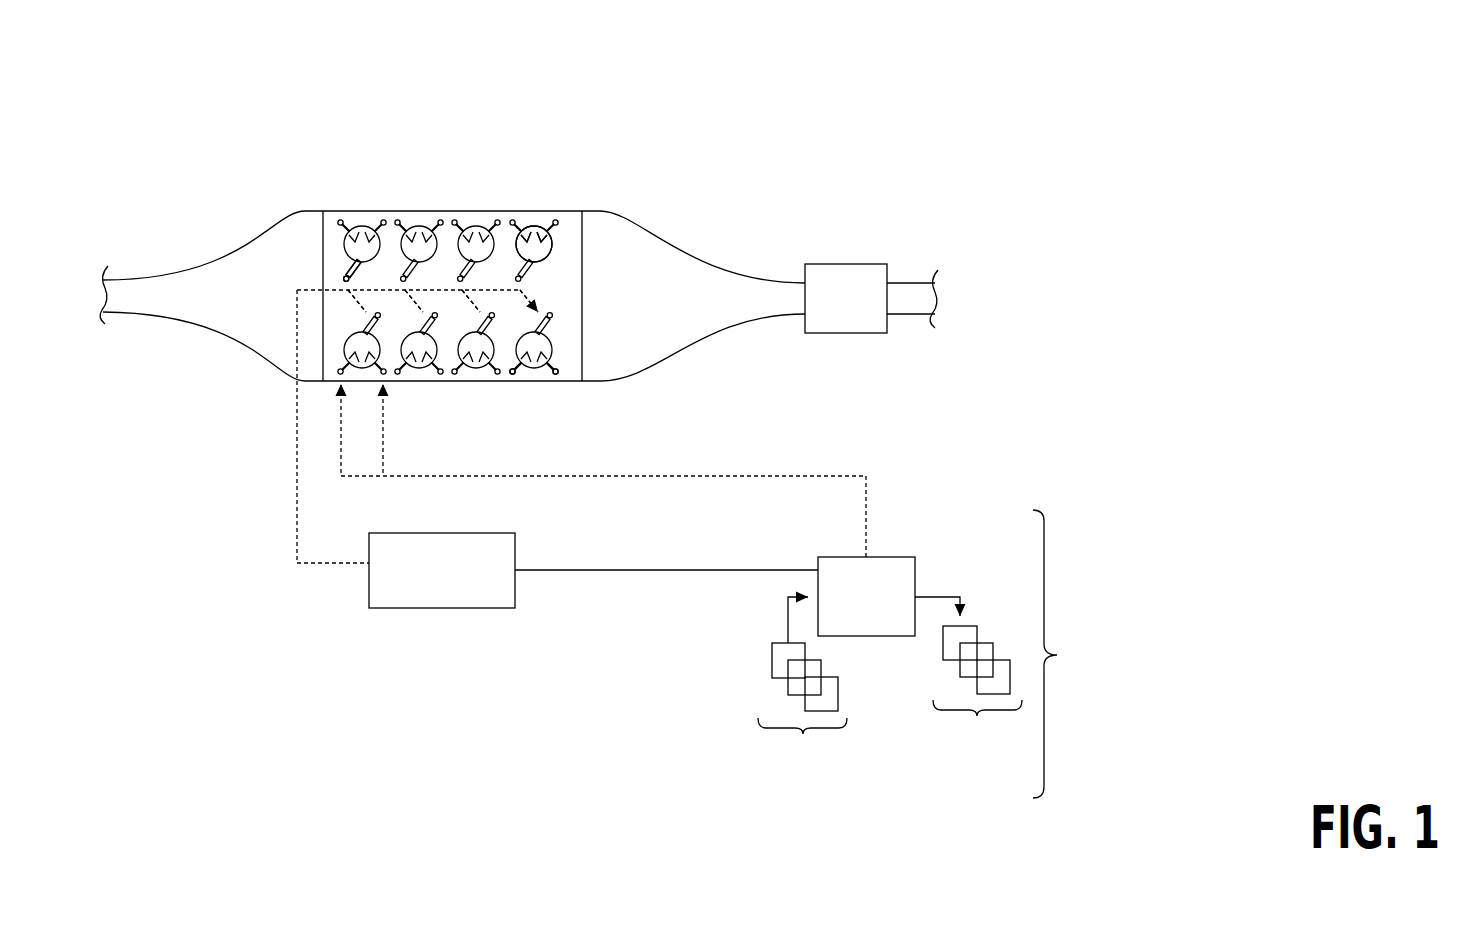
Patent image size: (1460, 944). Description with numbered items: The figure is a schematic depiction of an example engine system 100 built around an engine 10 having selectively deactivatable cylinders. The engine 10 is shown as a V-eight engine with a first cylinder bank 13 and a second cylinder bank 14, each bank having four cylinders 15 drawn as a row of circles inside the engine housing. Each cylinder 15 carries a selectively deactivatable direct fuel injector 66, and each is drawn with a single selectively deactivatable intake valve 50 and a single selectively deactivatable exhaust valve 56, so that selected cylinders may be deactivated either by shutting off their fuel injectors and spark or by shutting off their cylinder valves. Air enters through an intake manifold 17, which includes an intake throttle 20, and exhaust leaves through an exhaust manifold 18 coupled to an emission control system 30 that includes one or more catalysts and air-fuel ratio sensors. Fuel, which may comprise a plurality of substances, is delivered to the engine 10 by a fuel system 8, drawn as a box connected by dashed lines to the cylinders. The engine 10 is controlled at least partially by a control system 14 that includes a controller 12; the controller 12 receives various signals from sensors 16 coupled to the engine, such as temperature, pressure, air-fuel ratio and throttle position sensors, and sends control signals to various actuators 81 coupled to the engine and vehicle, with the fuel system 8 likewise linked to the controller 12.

The engine system 100 is at (1081, 88).
The engine 10 is at (518, 184).
The first cylinder bank 13 is at (449, 200).
The cylinders 15 is at (549, 240).
The fuel injectors 66 is at (350, 273).
The intake manifold 17 is at (201, 270).
The intake throttle 20 is at (160, 289).
The exhaust manifold 18 is at (648, 266).
The emission control system 30 is at (845, 263).
The intake valves 50 is at (513, 374).
The exhaust valves 56 is at (548, 374).
The fuel system 8 is at (436, 600).
The controller 12 is at (855, 608).
The sensors 16 is at (802, 689).
The actuators 81 is at (970, 681).
The control system 14 is at (450, 392).